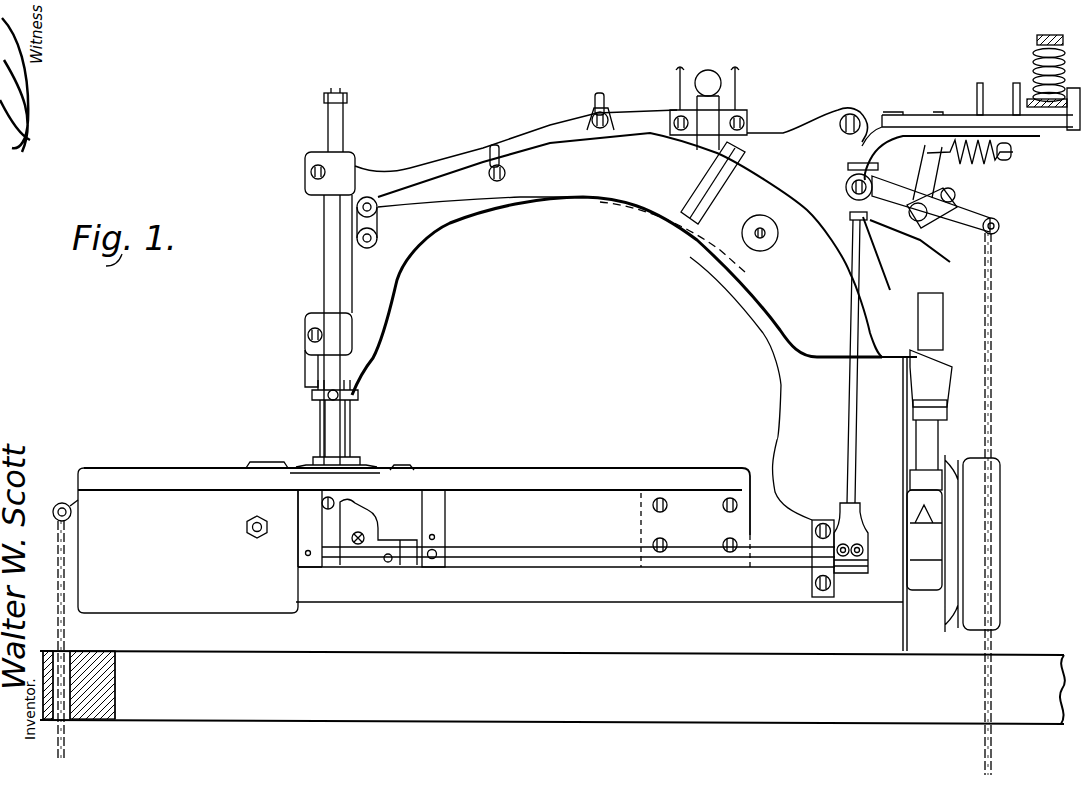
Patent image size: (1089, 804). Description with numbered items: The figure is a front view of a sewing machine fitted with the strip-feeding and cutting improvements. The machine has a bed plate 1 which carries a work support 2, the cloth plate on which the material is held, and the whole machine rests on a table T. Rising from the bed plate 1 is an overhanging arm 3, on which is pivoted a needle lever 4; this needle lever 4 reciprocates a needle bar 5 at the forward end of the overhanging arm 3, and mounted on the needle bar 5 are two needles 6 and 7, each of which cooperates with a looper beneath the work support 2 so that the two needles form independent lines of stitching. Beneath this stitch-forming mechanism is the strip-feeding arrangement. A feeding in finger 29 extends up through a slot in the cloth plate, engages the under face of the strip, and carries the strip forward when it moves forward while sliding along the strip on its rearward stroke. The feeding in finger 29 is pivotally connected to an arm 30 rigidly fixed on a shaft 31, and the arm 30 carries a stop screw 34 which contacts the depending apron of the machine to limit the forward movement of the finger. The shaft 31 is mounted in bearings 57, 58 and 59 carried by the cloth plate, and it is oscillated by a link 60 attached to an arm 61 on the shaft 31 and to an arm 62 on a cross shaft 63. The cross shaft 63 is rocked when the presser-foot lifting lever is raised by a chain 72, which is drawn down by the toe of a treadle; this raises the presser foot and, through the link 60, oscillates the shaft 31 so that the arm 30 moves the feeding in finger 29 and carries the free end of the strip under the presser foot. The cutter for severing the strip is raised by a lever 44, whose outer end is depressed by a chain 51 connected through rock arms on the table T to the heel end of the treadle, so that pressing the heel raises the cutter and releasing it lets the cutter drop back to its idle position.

The bed plate 1 is at (454, 632).
The table T is at (634, 698).
The work support 2 is at (513, 487).
The overhanging arm 3 is at (457, 210).
The needle lever 4 is at (628, 180).
The needle bar 5 is at (338, 292).
The needle 6 is at (318, 422).
The needle 7 is at (348, 422).
The feeding in finger 29 is at (365, 477).
The arm 30 is at (346, 513).
The shaft 31 is at (553, 557).
The stop screw 34 is at (363, 541).
The lever 44 is at (64, 505).
The chain 51 is at (66, 625).
The bearing 57 is at (314, 558).
The bearing 58 is at (437, 521).
The bearing 59 is at (818, 551).
The link 60 is at (850, 415).
The arm 61 is at (853, 576).
The arm 62 is at (890, 206).
The cross shaft 63 is at (922, 194).
The chain 72 is at (994, 370).